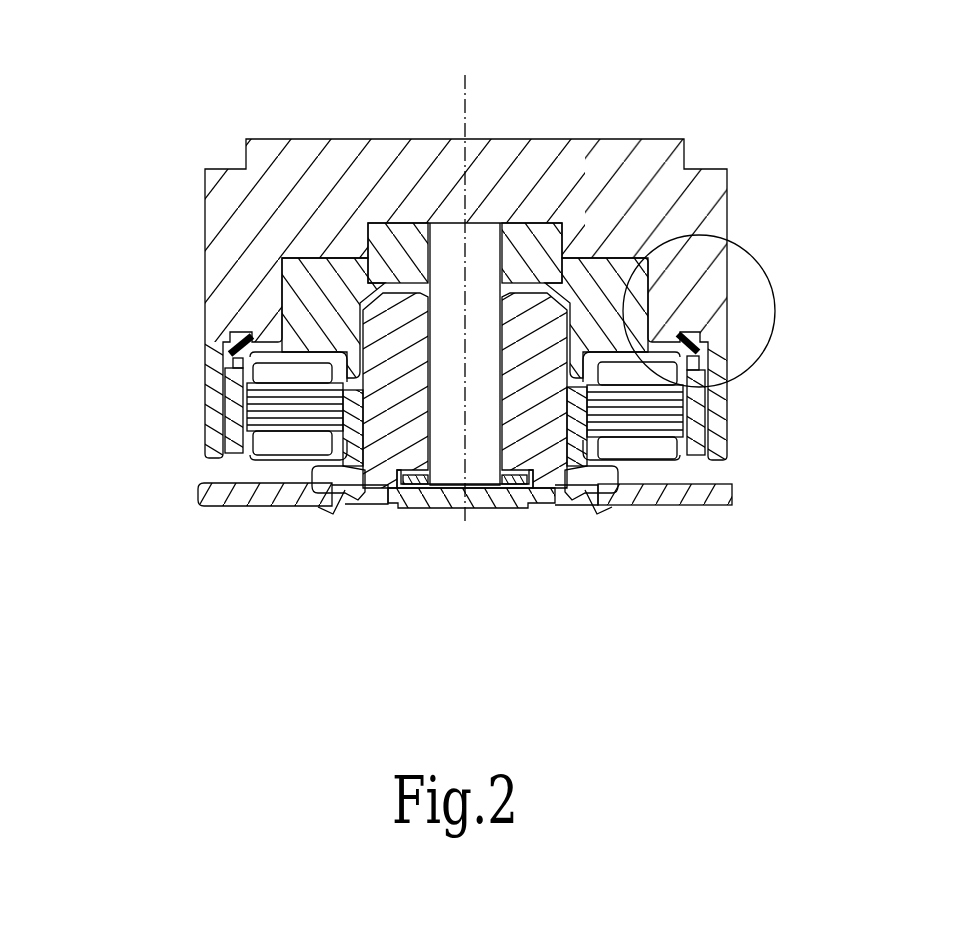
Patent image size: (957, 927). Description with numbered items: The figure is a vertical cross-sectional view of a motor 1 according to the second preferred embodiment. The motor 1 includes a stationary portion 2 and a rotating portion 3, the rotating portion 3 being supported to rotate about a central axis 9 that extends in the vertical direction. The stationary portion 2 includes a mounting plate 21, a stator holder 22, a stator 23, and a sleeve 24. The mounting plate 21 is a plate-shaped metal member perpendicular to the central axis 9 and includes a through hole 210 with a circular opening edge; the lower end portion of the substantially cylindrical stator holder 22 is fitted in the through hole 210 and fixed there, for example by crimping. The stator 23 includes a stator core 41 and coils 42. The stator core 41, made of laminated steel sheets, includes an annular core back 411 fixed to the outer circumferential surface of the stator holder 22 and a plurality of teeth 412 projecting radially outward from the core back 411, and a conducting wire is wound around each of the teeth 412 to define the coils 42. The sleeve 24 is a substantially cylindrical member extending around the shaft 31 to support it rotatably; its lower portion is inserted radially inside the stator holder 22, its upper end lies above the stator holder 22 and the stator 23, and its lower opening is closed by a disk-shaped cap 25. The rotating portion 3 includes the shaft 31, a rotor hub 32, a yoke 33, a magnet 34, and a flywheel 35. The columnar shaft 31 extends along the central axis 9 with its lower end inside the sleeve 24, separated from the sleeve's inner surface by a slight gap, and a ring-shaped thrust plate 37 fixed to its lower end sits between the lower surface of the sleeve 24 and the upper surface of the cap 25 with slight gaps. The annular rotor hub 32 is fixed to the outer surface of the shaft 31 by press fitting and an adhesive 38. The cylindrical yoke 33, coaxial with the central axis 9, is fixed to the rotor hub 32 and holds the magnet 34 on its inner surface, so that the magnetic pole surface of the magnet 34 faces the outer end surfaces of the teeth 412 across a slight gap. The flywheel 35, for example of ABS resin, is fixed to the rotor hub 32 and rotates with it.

The motor 1 is at (40, 28).
The stationary portion 2 is at (62, 520).
The rotating portion 3 is at (205, 72).
The central axis 9 is at (463, 105).
The mounting plate 21 is at (227, 495).
The stator holder 22 is at (350, 445).
The stator 23 is at (120, 335).
The sleeve 24 is at (396, 450).
The cap 25 is at (523, 470).
The through hole 210 is at (595, 505).
The shaft 31 is at (465, 442).
The rotor hub 32 is at (593, 285).
The yoke 33 is at (720, 438).
The magnet 34 is at (698, 408).
The flywheel 35 is at (255, 200).
The thrust plate 37 is at (413, 480).
The adhesive 38 is at (500, 240).
The stator core 41 is at (400, 482).
The coils 42 is at (292, 372).
The core back 411 is at (590, 410).
The teeth 412 is at (653, 413).